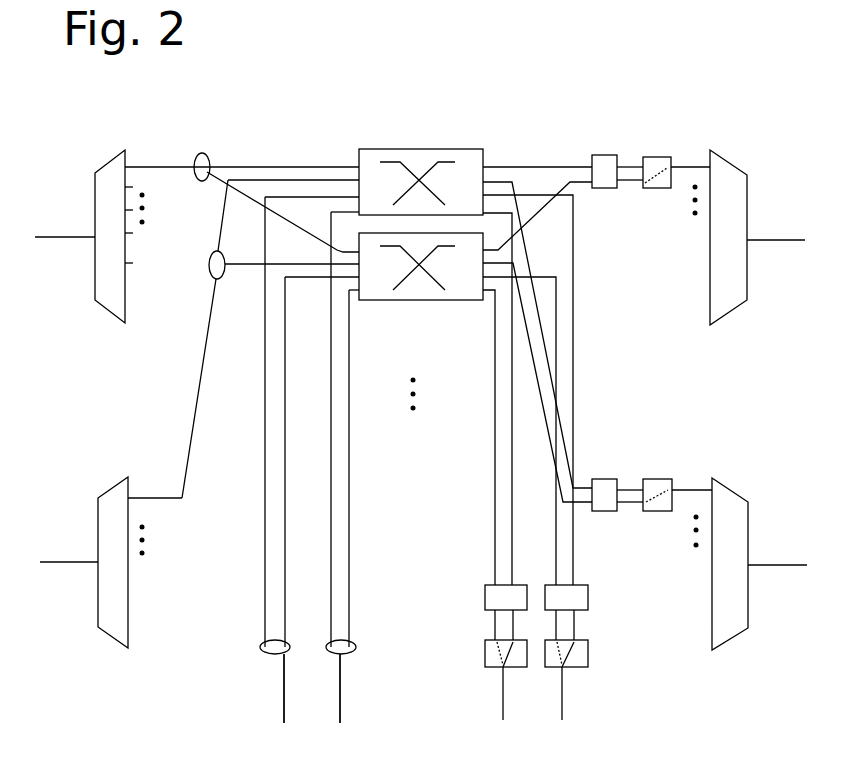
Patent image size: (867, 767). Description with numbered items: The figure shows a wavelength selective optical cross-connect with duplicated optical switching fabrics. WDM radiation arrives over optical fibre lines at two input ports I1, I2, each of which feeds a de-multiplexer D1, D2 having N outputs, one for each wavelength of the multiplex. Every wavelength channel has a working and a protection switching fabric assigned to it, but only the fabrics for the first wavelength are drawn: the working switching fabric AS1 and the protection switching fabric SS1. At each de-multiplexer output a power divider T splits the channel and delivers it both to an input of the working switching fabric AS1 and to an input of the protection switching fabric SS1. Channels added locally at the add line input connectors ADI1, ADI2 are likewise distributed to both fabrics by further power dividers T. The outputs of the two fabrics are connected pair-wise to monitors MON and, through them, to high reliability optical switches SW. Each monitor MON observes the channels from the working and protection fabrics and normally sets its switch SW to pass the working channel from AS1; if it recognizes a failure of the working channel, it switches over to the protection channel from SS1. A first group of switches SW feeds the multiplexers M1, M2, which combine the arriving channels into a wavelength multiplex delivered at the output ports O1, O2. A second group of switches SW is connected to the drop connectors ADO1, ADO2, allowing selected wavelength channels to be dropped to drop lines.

The de-multiplexer D1 is at (110, 178).
The de-multiplexer D2 is at (112, 505).
The input port I1 is at (63, 237).
The input port I2 is at (82, 560).
The power divider T is at (206, 153).
The working switching fabric AS1 is at (372, 153).
The protection switching fabric SS1 is at (374, 300).
The monitor MON is at (607, 163).
The optical switch SW is at (666, 186).
The multiplexer M1 is at (731, 178).
The multiplexer M2 is at (722, 506).
The output port O1 is at (779, 220).
The output port O2 is at (777, 565).
The add line input connector ADI1 is at (283, 712).
The add line input connector ADI2 is at (340, 688).
The drop connector ADO1 is at (562, 713).
The drop connector ADO2 is at (502, 715).